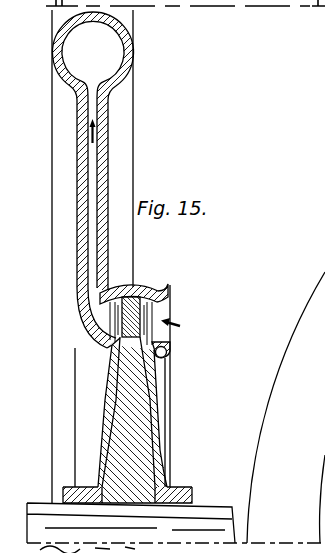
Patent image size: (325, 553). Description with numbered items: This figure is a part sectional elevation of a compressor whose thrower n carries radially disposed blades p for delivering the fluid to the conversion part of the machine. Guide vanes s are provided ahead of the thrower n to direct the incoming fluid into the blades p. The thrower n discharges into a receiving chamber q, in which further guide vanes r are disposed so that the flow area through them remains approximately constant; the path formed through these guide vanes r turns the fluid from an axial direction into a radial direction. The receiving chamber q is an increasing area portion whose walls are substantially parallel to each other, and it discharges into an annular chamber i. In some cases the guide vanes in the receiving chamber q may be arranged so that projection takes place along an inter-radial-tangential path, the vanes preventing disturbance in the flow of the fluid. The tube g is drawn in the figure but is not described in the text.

The annular chamber i is at (101, 56).
The tube g is at (92, 178).
The receiving chamber q is at (84, 307).
The guide vanes r is at (94, 285).
The blades p is at (130, 322).
The guide vanes s is at (153, 332).
The thrower n is at (128, 380).